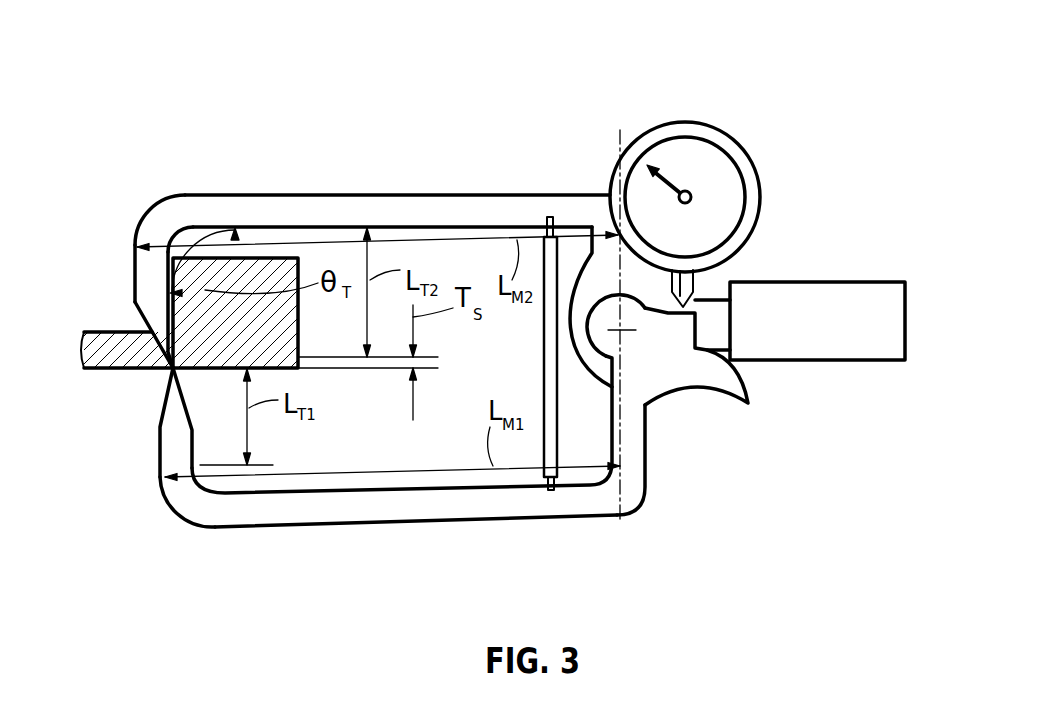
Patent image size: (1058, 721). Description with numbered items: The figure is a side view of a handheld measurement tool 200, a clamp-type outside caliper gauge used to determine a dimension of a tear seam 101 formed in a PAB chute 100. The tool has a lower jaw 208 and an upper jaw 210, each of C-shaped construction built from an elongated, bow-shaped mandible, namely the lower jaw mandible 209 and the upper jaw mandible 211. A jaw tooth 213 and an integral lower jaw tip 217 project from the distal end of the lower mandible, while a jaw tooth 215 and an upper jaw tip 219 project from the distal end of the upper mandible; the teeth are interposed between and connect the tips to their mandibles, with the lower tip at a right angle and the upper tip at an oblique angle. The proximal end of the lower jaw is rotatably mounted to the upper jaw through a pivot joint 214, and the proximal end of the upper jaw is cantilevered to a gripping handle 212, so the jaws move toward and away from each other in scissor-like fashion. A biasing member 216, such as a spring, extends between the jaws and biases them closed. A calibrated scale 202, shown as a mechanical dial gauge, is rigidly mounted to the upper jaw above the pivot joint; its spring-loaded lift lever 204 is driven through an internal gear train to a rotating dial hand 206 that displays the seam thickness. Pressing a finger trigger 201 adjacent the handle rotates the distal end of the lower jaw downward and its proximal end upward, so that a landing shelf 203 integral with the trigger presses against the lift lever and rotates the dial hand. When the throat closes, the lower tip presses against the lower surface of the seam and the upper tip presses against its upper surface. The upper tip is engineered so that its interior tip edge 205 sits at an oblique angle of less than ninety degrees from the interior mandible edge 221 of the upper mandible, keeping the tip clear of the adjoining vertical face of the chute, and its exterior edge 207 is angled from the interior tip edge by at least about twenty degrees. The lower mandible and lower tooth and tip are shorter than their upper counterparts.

The PAB chute 100 is at (108, 377).
The tear seam 101 is at (172, 355).
The measurement tool 200 is at (253, 48).
The finger trigger 201 is at (731, 400).
The calibrated scale 202 is at (748, 160).
The landing shelf 203 is at (687, 323).
The lift lever 204 is at (697, 283).
The interior tip edge 205 is at (168, 368).
The dial hand 206 is at (658, 162).
The exterior edge 207 is at (173, 360).
The lower jaw 208 is at (410, 540).
The lower jaw mandible 209 is at (368, 523).
The upper jaw 210 is at (410, 175).
The upper jaw mandible 211 is at (375, 195).
The gripping handle 212 is at (868, 282).
The jaw tooth 213 is at (160, 467).
The pivot joint 214 is at (598, 255).
The jaw tooth 215 is at (137, 258).
The biasing member 216 is at (540, 388).
The lower jaw tip 217 is at (160, 418).
The upper jaw tip 219 is at (133, 300).
The interior mandible edge 221 is at (310, 235).